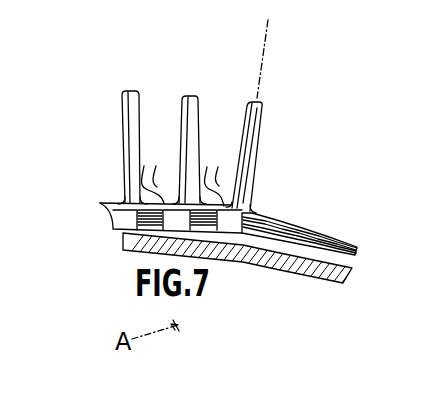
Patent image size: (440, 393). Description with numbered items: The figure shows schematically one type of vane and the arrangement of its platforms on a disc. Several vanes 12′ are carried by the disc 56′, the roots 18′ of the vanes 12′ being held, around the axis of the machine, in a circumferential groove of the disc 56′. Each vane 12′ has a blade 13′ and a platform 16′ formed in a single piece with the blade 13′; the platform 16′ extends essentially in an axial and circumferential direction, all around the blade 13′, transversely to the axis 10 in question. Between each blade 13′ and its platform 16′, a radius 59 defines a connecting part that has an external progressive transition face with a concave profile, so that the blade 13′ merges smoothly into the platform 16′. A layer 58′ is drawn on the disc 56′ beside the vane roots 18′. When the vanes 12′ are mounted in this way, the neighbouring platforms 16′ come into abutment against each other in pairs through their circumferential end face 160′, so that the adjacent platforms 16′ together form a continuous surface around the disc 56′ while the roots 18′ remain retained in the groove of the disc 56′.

The axis 10 is at (263, 47).
The vanes 12′ is at (243, 130).
The blade 13′ is at (127, 117).
The platforms 16′ is at (272, 163).
The roots 18′ is at (112, 224).
The disc 56′ is at (240, 250).
The abradable layer 58′ is at (272, 226).
The radius 59 is at (120, 195).
The circumferential end face 160′ is at (100, 202).